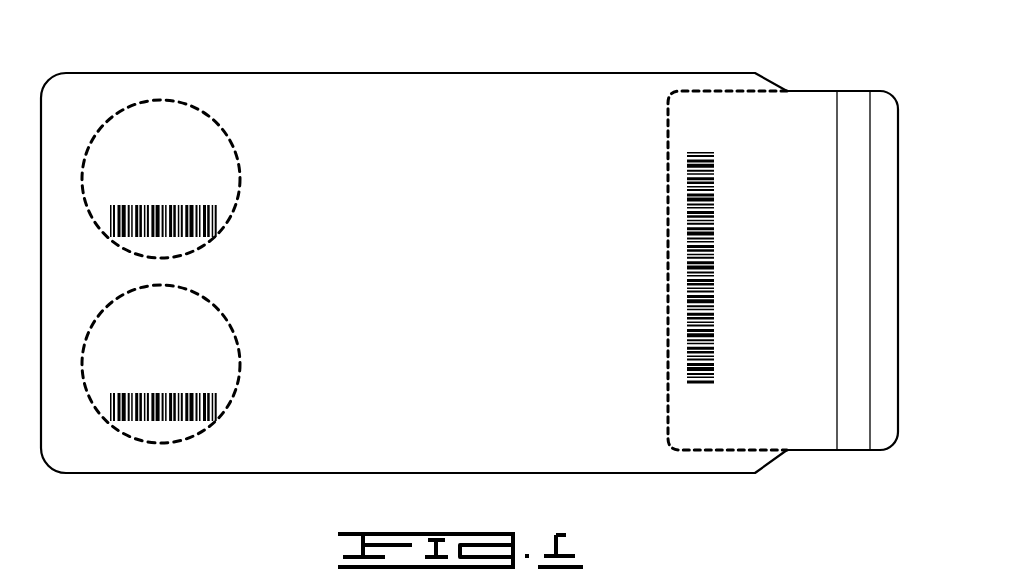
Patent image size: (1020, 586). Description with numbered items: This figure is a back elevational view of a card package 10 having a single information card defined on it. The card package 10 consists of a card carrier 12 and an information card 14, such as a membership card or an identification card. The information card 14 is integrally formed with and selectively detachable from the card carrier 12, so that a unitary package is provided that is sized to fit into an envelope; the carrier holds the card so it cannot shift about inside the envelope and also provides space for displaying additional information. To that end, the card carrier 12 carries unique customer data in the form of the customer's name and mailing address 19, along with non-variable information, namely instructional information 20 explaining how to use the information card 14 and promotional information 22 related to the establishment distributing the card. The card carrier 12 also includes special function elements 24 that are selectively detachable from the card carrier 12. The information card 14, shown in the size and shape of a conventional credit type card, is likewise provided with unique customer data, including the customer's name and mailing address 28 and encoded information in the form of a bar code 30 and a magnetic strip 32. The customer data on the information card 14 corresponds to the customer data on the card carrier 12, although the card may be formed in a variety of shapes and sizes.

The card package 10 is at (526, 72).
The card carrier 12 is at (636, 73).
The information card 14 is at (800, 110).
The customer's name and mailing address 19 is at (565, 418).
The instructional information 20 is at (345, 257).
The promotional information 22 is at (343, 128).
The special function elements 24 is at (153, 127).
The customer's name and mailing address 28 is at (780, 417).
The bar code 30 is at (705, 387).
The magnetic strip 32 is at (853, 418).